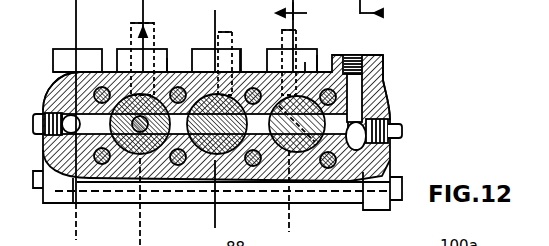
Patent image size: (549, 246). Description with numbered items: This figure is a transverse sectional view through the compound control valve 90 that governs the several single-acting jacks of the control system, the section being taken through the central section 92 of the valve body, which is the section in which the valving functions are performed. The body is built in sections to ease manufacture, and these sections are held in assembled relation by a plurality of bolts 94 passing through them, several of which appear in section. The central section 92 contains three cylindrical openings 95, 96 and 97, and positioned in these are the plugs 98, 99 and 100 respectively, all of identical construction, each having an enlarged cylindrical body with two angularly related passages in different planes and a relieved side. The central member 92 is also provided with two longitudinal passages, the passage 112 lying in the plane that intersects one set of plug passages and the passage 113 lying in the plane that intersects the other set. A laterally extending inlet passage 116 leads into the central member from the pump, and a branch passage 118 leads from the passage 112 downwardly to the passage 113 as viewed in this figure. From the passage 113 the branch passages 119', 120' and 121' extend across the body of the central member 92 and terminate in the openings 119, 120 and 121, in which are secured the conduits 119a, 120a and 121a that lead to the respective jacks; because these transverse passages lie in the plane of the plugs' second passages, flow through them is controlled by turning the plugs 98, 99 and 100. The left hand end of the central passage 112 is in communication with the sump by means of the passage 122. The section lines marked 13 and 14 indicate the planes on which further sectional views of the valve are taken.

The compound control valve 90 is at (385, 69).
The central section 92 is at (389, 109).
The bolts 94 is at (101, 168).
The cylindrical opening 95 is at (128, 167).
The cylindrical opening 96 is at (198, 170).
The cylindrical opening 97 is at (307, 160).
The plug 98 is at (145, 122).
The plug 99 is at (243, 72).
The plug 100 is at (320, 70).
The longitudinal passage 112 is at (380, 110).
The longitudinal passage 113 is at (342, 194).
The inlet passage 116 is at (362, 68).
The branch passage 118 is at (357, 143).
The opening 119 is at (158, 47).
The conduit 119a is at (150, 25).
The branch passage 119' is at (182, 61).
The opening 120 is at (209, 52).
The conduit 120a is at (225, 32).
The branch passage 120' is at (246, 57).
The opening 121 is at (282, 47).
The conduit 121a is at (357, 47).
The branch passage 121' is at (319, 56).
The passage 122 is at (76, 122).
The section line 13- 13 is at (382, 12).
The section line 14- 14 is at (302, 14).